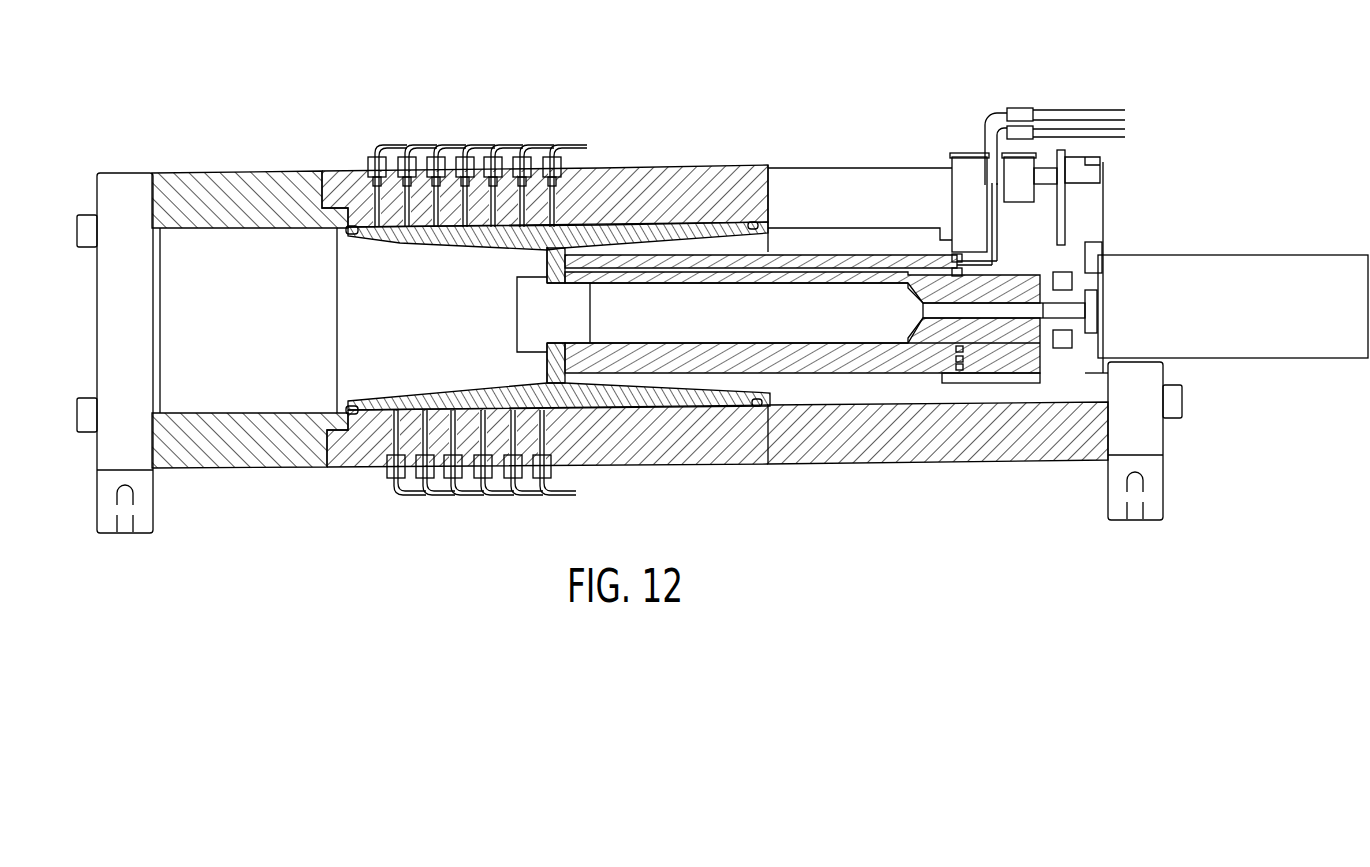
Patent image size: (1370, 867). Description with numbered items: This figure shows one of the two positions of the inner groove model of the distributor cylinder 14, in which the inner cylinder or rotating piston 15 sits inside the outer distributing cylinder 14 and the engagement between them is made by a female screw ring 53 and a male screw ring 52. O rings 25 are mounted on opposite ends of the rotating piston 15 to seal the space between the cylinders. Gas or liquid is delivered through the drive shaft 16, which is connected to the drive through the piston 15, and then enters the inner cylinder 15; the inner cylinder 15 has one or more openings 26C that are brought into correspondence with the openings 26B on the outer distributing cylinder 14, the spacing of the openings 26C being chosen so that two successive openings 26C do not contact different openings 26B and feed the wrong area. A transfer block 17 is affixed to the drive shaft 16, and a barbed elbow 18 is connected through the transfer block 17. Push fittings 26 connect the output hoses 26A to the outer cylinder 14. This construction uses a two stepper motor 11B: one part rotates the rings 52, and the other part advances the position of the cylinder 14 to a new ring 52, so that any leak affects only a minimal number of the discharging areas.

The female screw ring 53 is at (357, 223).
The push fittings 26 is at (387, 480).
The output hoses 26A is at (489, 150).
The openings 26C is at (496, 165).
The openings 26B is at (540, 224).
The outer distributing cylinder 14 is at (728, 166).
The male screw ring 52 is at (572, 213).
The rotating piston 15 is at (767, 250).
The drive shaft 16 is at (888, 252).
The transfer block 17 is at (970, 153).
The barbed elbow 18 is at (1007, 115).
The two stepper motor 11B is at (1300, 255).
The O rings 25 is at (757, 405).